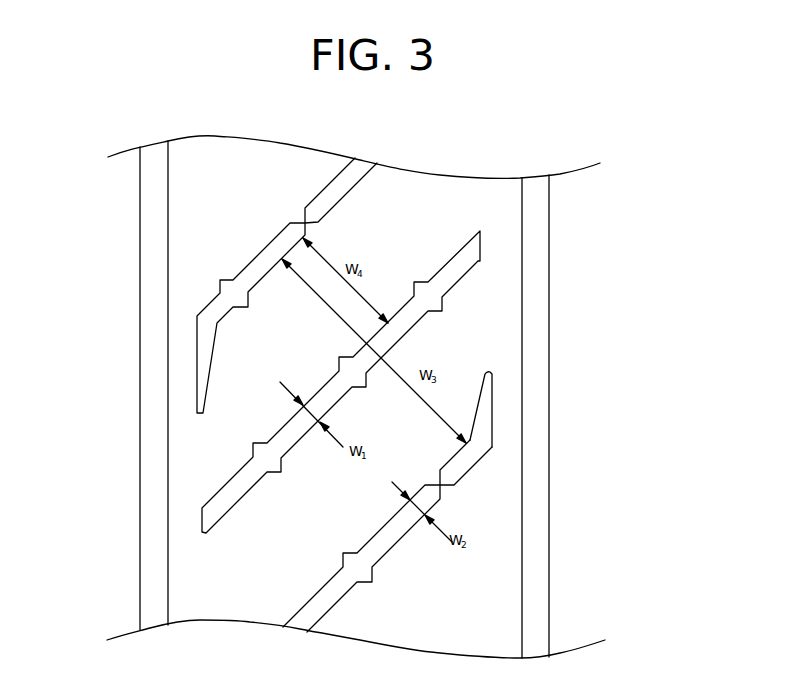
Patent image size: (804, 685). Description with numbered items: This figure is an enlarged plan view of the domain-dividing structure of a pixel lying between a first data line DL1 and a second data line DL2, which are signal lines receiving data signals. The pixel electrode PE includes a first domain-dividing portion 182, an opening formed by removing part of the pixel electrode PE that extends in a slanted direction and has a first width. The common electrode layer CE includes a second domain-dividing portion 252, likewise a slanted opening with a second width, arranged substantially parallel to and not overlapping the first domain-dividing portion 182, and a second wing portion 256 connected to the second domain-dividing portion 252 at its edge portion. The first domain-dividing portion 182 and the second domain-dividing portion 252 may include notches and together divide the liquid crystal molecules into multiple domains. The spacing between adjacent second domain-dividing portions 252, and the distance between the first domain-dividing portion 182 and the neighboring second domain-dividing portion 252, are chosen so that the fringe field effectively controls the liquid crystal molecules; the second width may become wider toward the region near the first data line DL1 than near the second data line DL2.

The first domain-dividing portion 182 is at (474, 268).
The second domain-dividing portion 252 is at (456, 502).
The second wing portion 256 is at (486, 405).
The pixel electrode PE is at (443, 207).
The common electrode layer CE is at (456, 502).
The first data line DL1 is at (157, 337).
The second data line DL2 is at (537, 352).